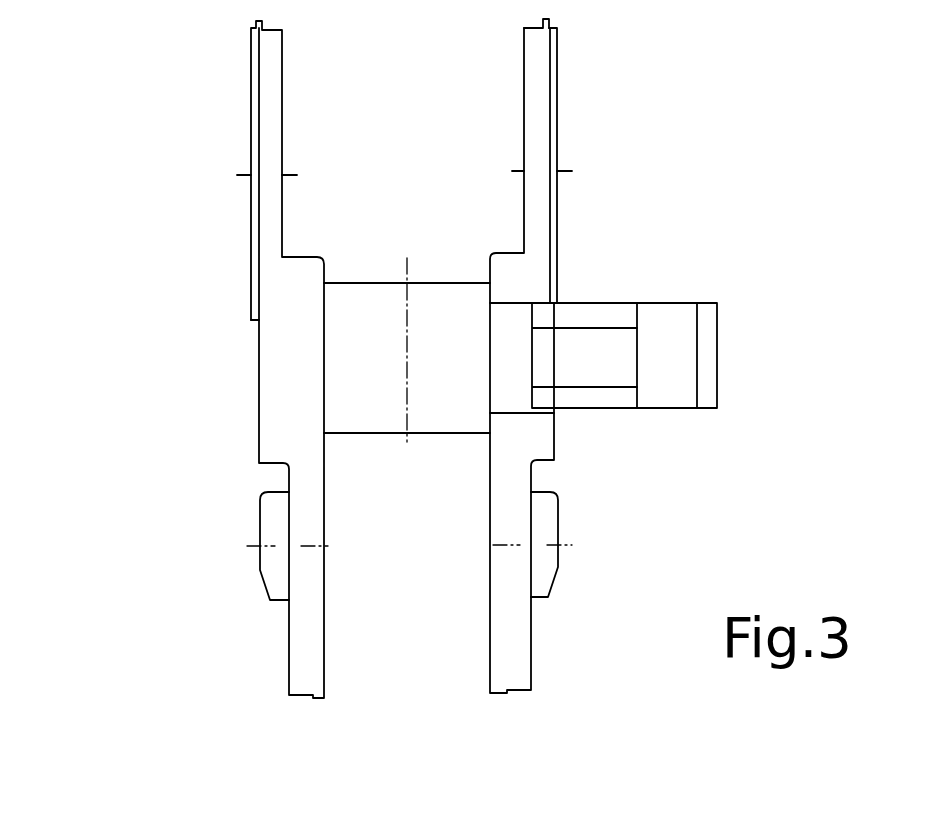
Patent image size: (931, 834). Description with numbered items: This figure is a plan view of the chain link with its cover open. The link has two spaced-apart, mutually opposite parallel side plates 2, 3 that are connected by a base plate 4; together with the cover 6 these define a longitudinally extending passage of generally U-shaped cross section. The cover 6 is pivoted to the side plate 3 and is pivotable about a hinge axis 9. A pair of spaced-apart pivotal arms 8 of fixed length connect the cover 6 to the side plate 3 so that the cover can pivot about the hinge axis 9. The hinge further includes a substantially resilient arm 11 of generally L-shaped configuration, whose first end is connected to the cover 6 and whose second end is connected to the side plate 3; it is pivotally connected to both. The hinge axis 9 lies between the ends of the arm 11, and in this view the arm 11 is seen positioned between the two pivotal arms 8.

The side plate 2 is at (285, 345).
The side plate 3 is at (537, 96).
The base plate 4 is at (365, 295).
The cover 6 is at (682, 335).
The pivotal arms 8 is at (598, 315).
The hinge axis 9 is at (524, 303).
The resilient arm 11 is at (608, 345).